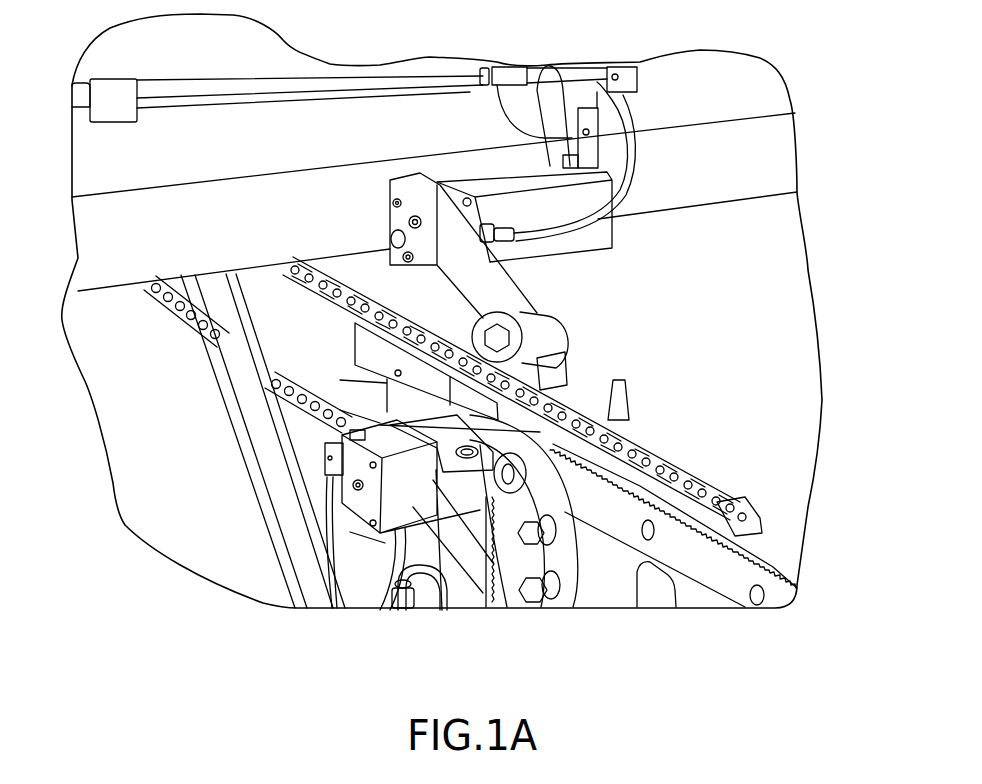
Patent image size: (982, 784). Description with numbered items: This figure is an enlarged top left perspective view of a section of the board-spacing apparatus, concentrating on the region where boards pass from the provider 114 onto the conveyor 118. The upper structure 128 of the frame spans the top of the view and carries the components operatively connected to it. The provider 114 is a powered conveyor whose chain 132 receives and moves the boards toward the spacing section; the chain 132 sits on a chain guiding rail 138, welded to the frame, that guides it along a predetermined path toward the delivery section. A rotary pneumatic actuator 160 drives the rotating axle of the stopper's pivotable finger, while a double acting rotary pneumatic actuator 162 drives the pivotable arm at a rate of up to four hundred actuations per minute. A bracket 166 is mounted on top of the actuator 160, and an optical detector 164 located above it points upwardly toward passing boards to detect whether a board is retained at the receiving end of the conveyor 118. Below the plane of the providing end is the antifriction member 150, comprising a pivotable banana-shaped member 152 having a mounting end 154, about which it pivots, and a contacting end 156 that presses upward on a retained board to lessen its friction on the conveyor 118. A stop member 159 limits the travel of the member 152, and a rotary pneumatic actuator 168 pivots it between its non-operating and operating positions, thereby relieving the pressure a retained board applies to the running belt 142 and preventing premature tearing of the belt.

The provider 114 is at (350, 267).
The conveyor 118 is at (772, 538).
The upper structure 128 is at (90, 230).
The chain 132 is at (635, 455).
The chain guiding rail 138 is at (283, 329).
The belt 142 is at (770, 558).
The antifriction member 150 is at (582, 483).
The pivotable banana-shaped member 152 is at (577, 573).
The mounting end 154 is at (548, 538).
The contacting end 156 is at (512, 443).
The stop member 159 is at (590, 562).
The rotary pneumatic actuator 160 is at (410, 503).
The double acting rotary pneumatic actuator 162 is at (587, 242).
The optical detector 164 is at (483, 508).
The bracket 166 is at (470, 458).
The rotary pneumatic actuator 168 is at (733, 507).